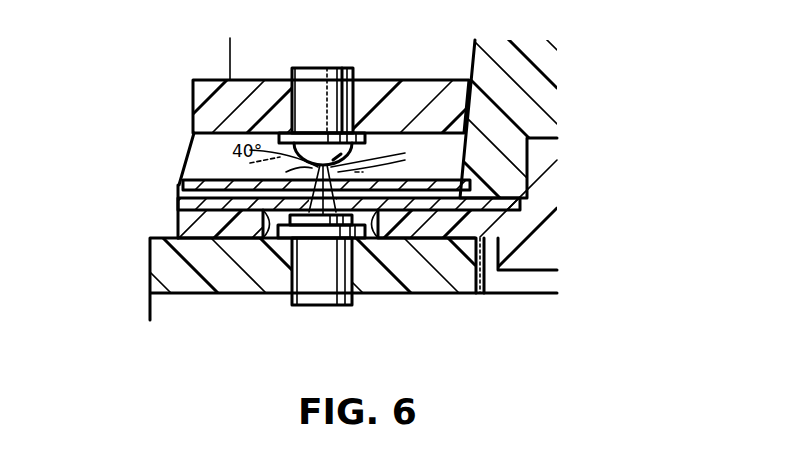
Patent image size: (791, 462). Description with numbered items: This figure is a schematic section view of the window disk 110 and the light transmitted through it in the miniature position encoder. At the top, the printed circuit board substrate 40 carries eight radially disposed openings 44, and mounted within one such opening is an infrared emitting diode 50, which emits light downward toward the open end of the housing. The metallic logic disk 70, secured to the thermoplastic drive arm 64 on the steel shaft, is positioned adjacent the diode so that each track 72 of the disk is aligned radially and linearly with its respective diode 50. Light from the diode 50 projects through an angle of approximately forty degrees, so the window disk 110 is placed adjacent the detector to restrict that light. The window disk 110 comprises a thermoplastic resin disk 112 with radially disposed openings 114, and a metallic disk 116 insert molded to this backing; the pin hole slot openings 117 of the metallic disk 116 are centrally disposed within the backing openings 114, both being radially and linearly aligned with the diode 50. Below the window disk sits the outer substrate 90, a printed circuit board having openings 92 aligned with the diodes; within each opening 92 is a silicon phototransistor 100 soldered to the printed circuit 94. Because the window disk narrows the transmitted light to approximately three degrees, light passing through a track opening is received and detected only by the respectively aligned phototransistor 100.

The printed circuit board substrate 40 is at (193, 97).
The radially disposed openings 44 is at (291, 105).
The infrared emitting diode 50 is at (325, 68).
The drive arm 64 is at (540, 95).
The logic disk 70 is at (177, 187).
The track 72 is at (385, 159).
The metallic disk 116 is at (177, 204).
The pin hole slot openings 117 is at (308, 198).
The thermoplastic resin disk 112 is at (174, 222).
The window disk 110 is at (552, 240).
The outer substrate 90 is at (150, 285).
The radially disposed openings 114 is at (263, 270).
The openings 92 is at (290, 280).
The silicon phototransistor 100 is at (342, 306).
The printed circuit 94 is at (493, 280).